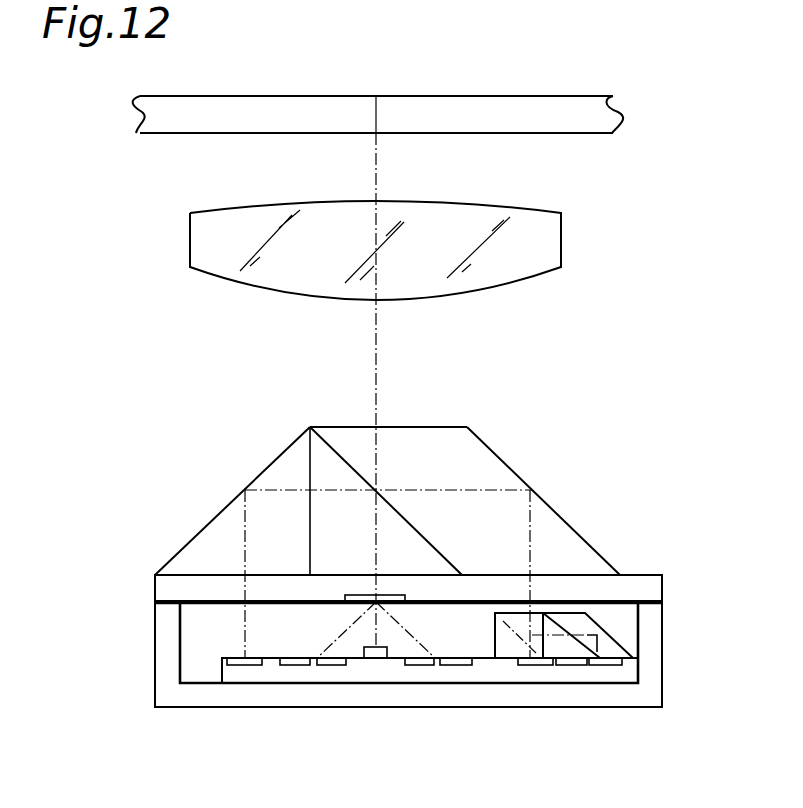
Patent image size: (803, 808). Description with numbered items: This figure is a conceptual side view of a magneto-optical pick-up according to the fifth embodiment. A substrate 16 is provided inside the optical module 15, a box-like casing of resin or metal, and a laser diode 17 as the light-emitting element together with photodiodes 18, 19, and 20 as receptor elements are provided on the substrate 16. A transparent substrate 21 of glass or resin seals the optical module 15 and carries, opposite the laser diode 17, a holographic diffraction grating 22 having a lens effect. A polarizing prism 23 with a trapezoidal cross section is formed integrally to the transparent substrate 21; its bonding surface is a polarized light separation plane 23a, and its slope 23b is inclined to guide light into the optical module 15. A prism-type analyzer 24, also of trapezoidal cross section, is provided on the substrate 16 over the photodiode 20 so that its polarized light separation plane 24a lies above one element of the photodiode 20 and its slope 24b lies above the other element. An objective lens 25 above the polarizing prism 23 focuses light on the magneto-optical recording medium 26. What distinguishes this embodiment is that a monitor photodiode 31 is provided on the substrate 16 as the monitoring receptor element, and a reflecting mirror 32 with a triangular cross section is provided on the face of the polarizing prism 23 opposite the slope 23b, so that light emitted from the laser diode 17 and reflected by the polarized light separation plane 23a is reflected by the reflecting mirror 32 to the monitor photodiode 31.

The optical module 15 is at (153, 665).
The substrate 16 is at (235, 676).
The laser diode 17 is at (378, 658).
The photodiode 18 is at (313, 670).
The photodiode 19 is at (435, 667).
The photodiode 20 is at (573, 668).
The transparent substrate 21 is at (160, 588).
The holographic diffraction grating 22 is at (387, 597).
The polarizing prism 23 is at (440, 436).
The polarized light separation plane 23a is at (353, 470).
The slope 23b is at (580, 533).
The prism-type analyzer 24 is at (607, 633).
The polarized light separation plane 24a is at (513, 633).
The slope 24b is at (603, 647).
The objective lens 25 is at (255, 272).
The magneto-optical recording medium 26 is at (585, 122).
The monitor photodiode 31 is at (257, 667).
The reflecting mirror 32 is at (208, 543).